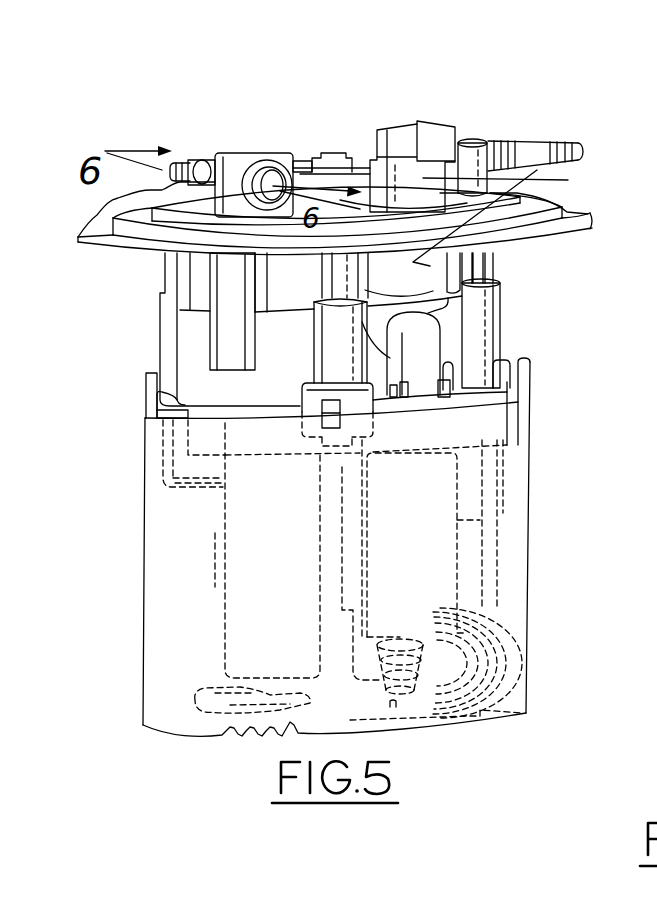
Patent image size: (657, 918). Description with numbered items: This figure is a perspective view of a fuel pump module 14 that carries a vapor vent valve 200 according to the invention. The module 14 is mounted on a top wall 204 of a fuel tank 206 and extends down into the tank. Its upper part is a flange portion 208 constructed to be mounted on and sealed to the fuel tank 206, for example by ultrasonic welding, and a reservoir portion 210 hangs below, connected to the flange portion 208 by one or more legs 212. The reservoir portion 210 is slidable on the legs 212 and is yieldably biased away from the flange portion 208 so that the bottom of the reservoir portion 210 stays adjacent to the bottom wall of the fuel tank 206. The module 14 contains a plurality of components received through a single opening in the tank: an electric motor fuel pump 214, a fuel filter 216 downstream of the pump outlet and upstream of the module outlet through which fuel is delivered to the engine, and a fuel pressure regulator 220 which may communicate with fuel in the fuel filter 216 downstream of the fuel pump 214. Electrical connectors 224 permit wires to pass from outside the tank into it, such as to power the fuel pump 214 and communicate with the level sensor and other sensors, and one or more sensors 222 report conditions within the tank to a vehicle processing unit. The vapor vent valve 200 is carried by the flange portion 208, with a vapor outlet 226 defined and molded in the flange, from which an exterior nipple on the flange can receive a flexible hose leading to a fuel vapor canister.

The fuel pump module 14 is at (559, 117).
The vapor vent valve 200 is at (180, 358).
The top wall 204 is at (567, 229).
The fuel tank 206 is at (600, 209).
The flange portion 208 is at (144, 244).
The reservoir portion 210 is at (133, 577).
The legs 212 is at (487, 268).
The electric motor fuel pump 214 is at (230, 633).
The fuel filter 216 is at (453, 582).
The fuel pressure regulator 220 is at (508, 653).
The sensors 222 is at (333, 157).
The electrical connectors 224 is at (537, 170).
The vapor outlet 226 is at (229, 154).